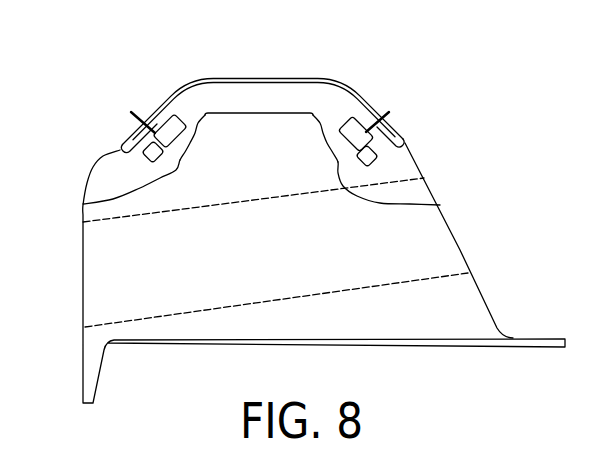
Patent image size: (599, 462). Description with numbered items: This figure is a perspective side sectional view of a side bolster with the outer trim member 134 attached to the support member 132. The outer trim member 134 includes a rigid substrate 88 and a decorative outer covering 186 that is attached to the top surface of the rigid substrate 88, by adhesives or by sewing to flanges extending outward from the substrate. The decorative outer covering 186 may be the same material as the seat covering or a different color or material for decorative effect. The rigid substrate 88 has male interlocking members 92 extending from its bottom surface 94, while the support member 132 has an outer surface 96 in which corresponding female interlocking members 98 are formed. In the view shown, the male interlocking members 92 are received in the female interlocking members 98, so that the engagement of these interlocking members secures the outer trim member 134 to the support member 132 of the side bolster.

The rigid substrate 88 is at (305, 97).
The interlocking members 92 is at (152, 157).
The bottom surface 94 is at (288, 113).
The outer surface 96 is at (273, 111).
The corresponding interlocking members 98 is at (83, 205).
The support member 132 is at (453, 310).
The outer trim member 134 is at (213, 78).
The decorative outer covering 186 is at (237, 78).